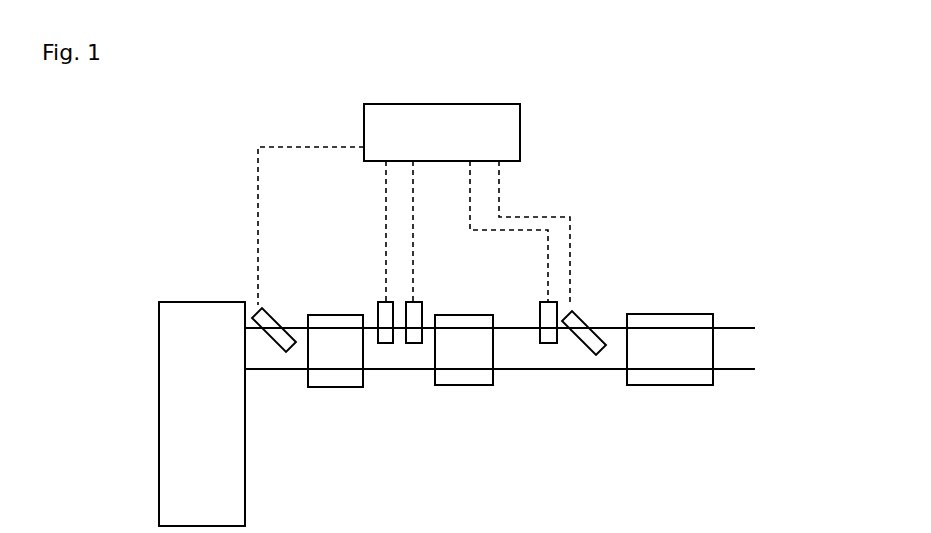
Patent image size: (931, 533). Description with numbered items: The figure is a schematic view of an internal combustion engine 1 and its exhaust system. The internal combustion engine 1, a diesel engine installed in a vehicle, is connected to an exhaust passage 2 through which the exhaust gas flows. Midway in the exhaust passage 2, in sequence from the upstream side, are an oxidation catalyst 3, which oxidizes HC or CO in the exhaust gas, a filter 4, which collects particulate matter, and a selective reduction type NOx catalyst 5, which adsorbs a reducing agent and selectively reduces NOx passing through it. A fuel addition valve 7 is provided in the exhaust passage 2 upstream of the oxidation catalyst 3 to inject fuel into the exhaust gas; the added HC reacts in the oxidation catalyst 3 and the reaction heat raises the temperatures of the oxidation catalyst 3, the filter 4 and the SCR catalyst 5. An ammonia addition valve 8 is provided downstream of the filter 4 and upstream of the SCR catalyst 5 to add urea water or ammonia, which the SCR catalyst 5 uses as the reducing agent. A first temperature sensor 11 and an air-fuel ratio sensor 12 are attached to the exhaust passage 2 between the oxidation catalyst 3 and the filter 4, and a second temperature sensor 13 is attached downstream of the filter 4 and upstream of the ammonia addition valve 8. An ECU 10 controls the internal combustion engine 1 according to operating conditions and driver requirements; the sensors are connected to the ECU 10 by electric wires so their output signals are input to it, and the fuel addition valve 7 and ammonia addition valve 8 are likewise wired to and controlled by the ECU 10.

The internal combustion engine 1 is at (245, 498).
The exhaust passage 2 is at (413, 369).
The oxidation catalyst 3 is at (323, 387).
The filter 4 is at (455, 386).
The selective reduction type NOx catalyst 5 is at (668, 386).
The fuel addition valve 7 is at (268, 310).
The ammonia addition valve 8 is at (570, 317).
The ECU 10 is at (372, 161).
The first temperature sensor 11 is at (373, 307).
The air-fuel ratio sensor 12 is at (428, 307).
The second temperature sensor 13 is at (538, 305).